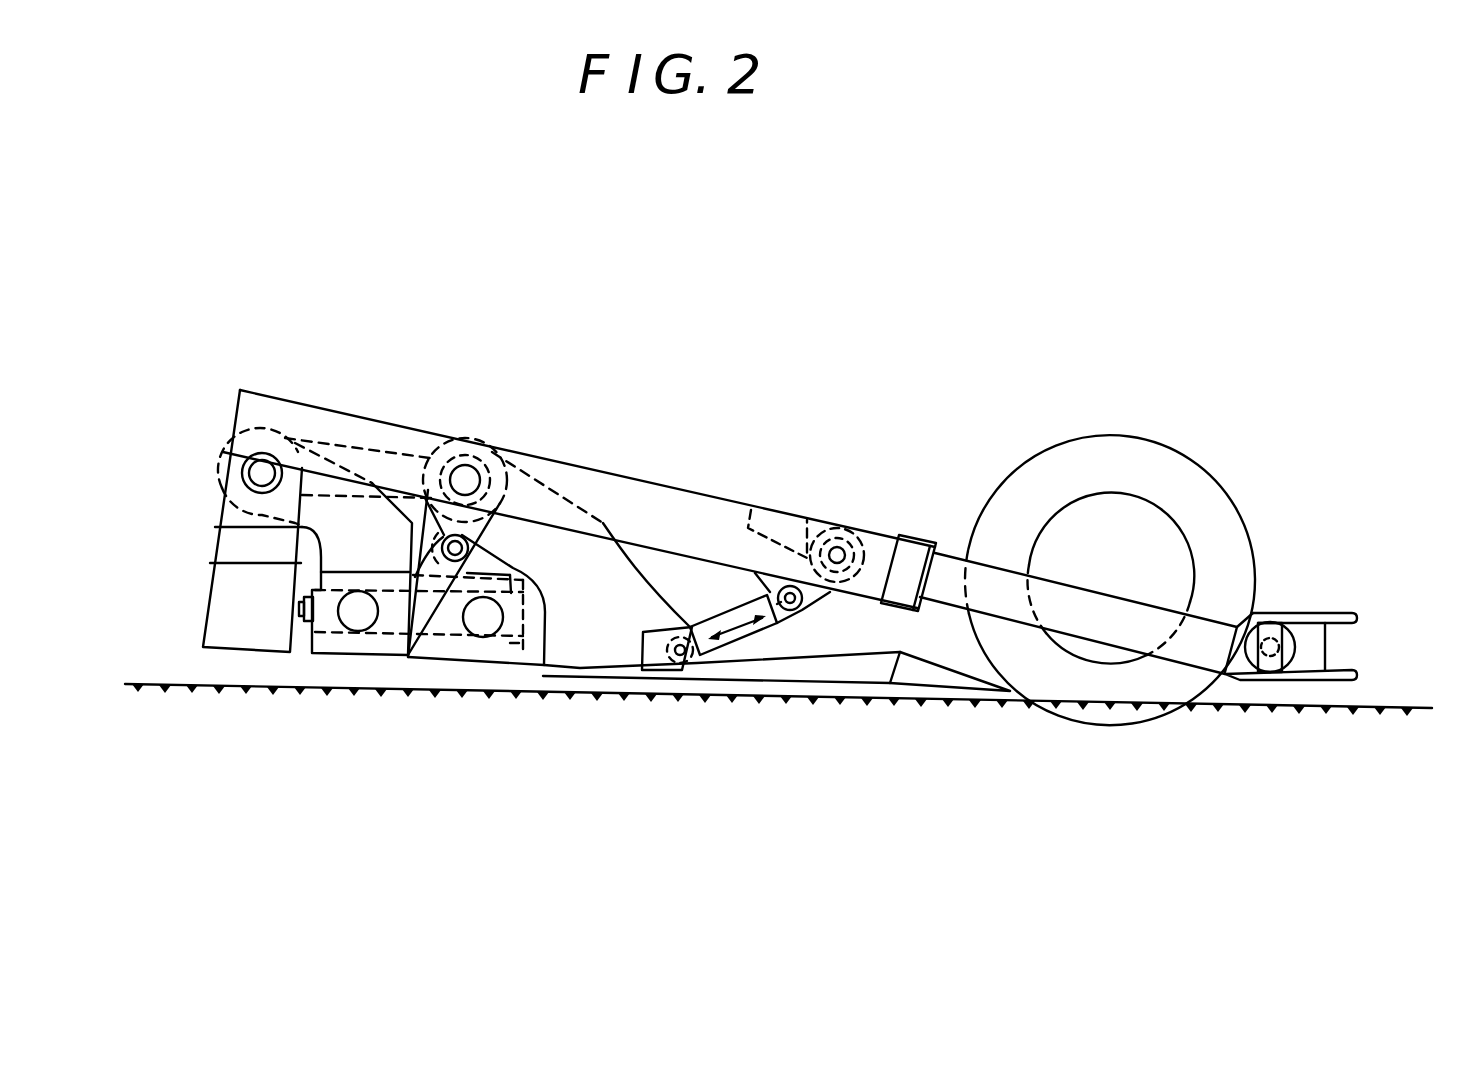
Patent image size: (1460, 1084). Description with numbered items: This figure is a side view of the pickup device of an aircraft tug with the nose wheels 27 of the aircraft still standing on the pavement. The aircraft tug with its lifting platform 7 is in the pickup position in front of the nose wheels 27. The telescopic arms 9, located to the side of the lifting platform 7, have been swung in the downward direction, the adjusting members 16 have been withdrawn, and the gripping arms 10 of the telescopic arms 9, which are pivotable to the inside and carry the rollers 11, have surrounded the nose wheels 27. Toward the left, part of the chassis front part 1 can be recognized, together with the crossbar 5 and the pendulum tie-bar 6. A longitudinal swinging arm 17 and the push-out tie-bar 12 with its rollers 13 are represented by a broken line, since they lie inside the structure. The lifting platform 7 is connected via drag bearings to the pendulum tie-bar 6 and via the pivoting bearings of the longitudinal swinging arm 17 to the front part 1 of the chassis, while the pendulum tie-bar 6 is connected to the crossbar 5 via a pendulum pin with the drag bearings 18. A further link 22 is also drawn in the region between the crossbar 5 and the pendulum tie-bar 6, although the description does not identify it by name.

The chassis front part 1 is at (230, 598).
The crossbar 5 is at (357, 643).
The pendulum tie-bar 6 is at (503, 652).
The lifting platform 7 is at (600, 648).
The telescopic arms 9 is at (610, 503).
The gripping arms 10 is at (1293, 635).
The rollers 11 is at (1270, 647).
The push-out tie-bar 12 is at (778, 528).
The rollers 13 is at (857, 532).
The adjusting members 16 is at (760, 620).
The longitudinal swinging arm 17 is at (372, 471).
The drag bearings 18 is at (328, 613).
The swing link 22 is at (454, 550).
The nose wheels 27 is at (1100, 455).